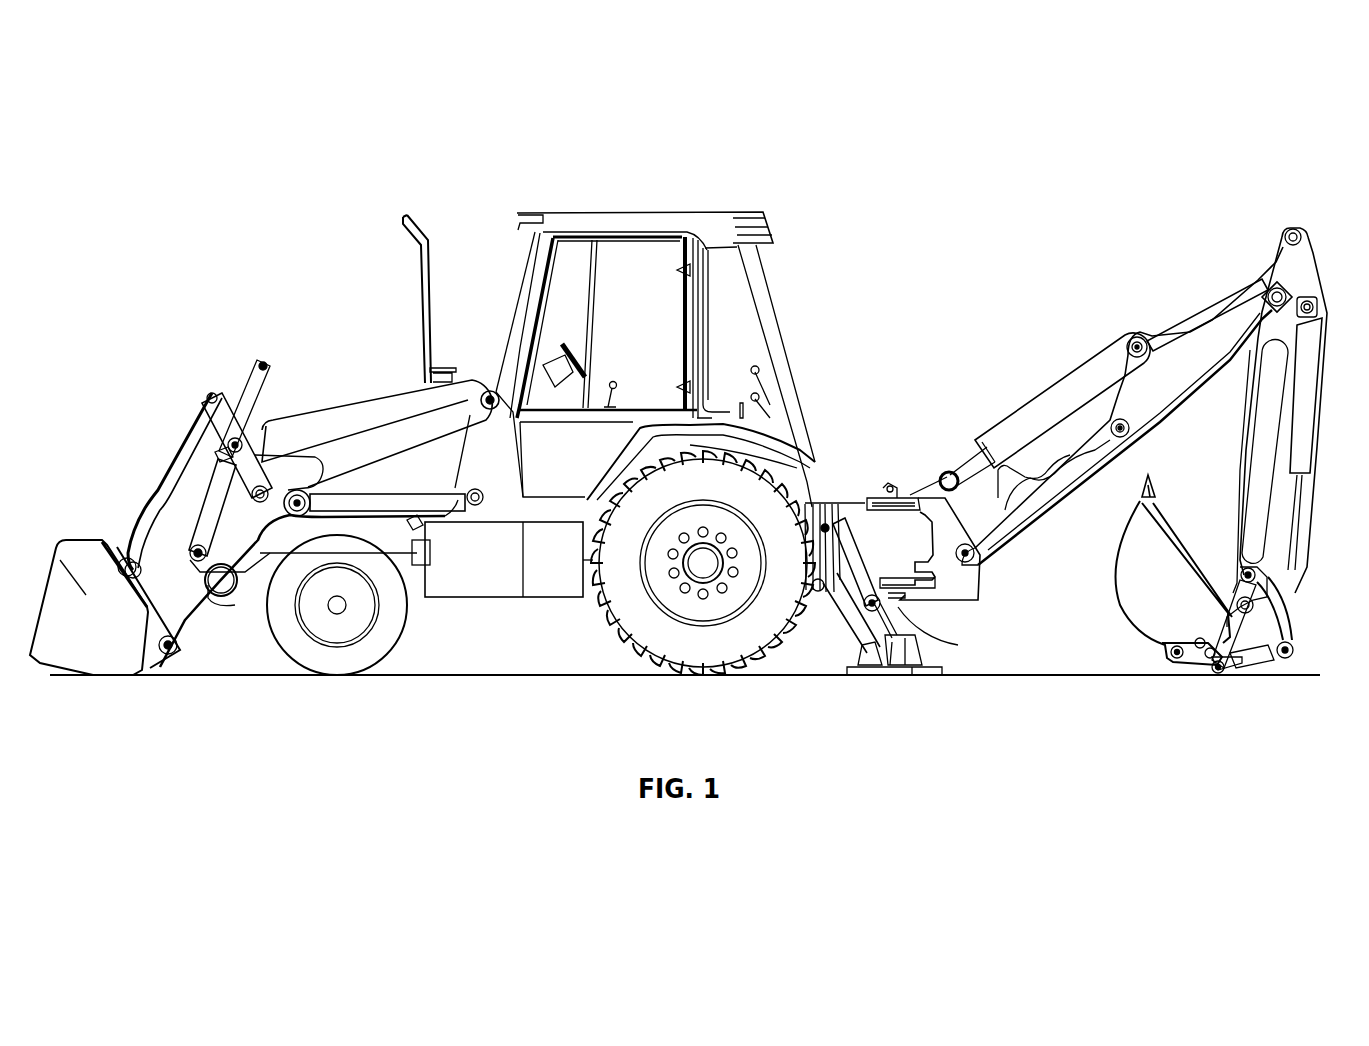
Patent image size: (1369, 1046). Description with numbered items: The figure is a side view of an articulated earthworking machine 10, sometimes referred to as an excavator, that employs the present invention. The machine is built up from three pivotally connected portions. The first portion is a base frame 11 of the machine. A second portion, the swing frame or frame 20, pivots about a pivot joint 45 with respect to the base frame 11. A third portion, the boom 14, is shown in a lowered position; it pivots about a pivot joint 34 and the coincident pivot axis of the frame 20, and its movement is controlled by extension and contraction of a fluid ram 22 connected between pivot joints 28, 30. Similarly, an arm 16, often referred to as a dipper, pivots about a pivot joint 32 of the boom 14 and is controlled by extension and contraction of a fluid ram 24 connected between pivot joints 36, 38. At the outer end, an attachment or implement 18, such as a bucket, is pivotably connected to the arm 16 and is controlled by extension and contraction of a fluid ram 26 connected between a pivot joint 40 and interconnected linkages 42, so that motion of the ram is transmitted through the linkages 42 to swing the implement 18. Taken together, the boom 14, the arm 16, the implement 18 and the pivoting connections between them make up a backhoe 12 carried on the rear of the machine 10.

The articulated earthworking machine 10 is at (698, 168).
The base frame 11 is at (813, 480).
The backhoe 12 is at (1049, 180).
The boom 14 is at (1070, 497).
The arm 16 is at (1247, 467).
The implement 18 is at (1155, 625).
The swing frame 20 is at (943, 580).
The fluid ram 22 is at (1063, 383).
The fluid ram 24 is at (1220, 290).
The fluid ram 26 is at (1318, 410).
The pivot joint 28 is at (940, 473).
The pivot joint 30 is at (1140, 340).
The pivot joint 32 is at (1273, 287).
The pivot joint 34 is at (980, 557).
The pivot joint 36 is at (1297, 232).
The pivot joint 38 is at (1130, 430).
The pivot joint 40 is at (1313, 297).
The interconnected linkages 42 is at (1225, 683).
The pivot joint 45 is at (900, 600).